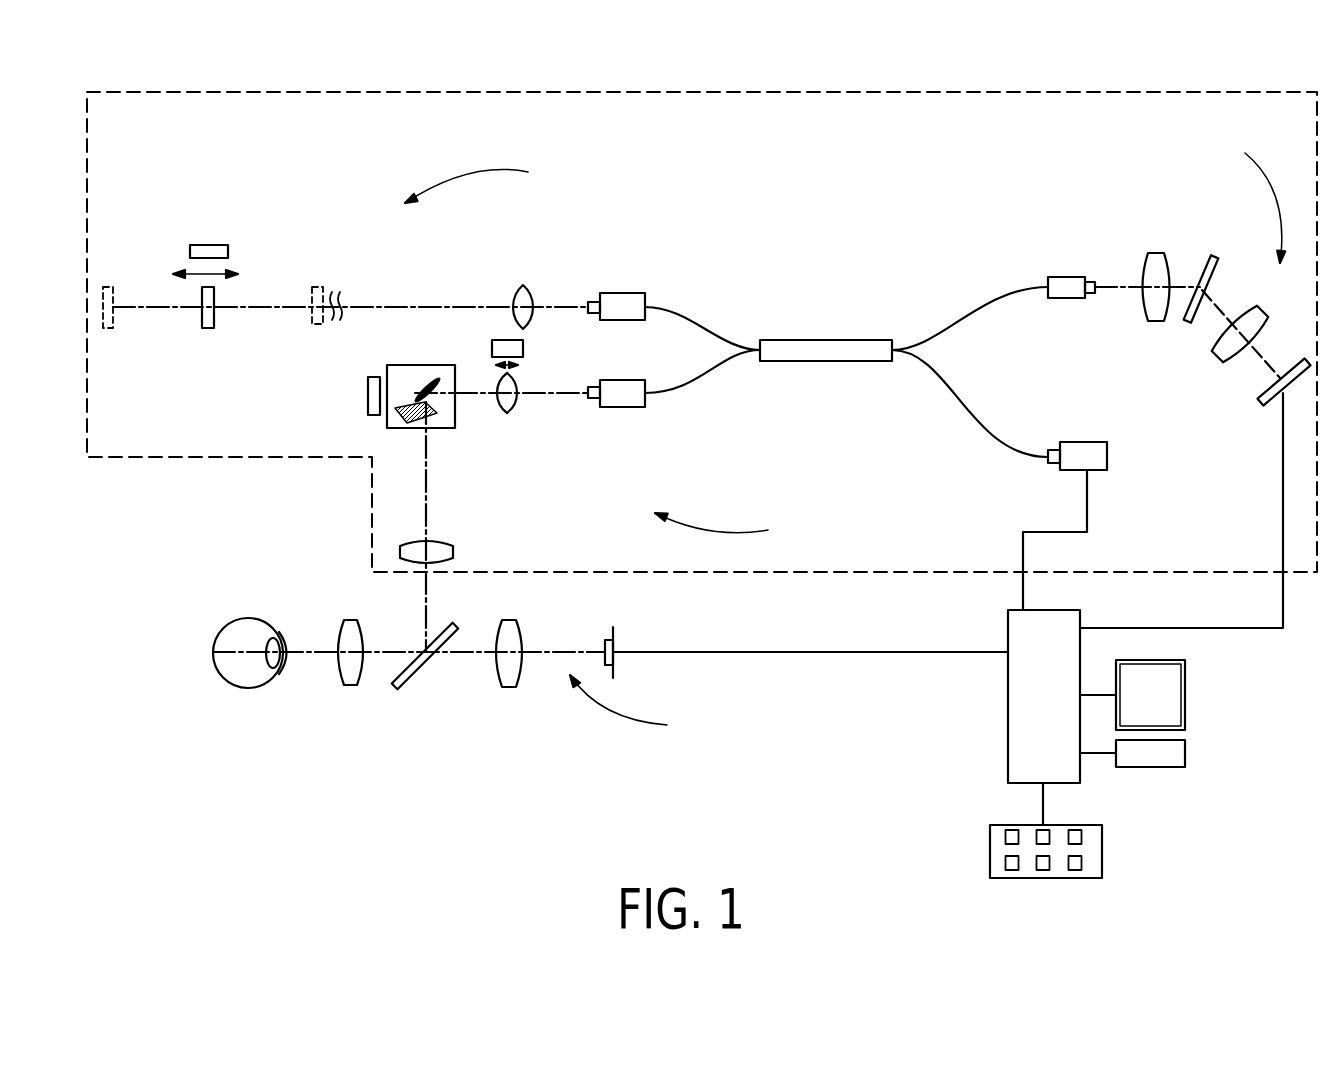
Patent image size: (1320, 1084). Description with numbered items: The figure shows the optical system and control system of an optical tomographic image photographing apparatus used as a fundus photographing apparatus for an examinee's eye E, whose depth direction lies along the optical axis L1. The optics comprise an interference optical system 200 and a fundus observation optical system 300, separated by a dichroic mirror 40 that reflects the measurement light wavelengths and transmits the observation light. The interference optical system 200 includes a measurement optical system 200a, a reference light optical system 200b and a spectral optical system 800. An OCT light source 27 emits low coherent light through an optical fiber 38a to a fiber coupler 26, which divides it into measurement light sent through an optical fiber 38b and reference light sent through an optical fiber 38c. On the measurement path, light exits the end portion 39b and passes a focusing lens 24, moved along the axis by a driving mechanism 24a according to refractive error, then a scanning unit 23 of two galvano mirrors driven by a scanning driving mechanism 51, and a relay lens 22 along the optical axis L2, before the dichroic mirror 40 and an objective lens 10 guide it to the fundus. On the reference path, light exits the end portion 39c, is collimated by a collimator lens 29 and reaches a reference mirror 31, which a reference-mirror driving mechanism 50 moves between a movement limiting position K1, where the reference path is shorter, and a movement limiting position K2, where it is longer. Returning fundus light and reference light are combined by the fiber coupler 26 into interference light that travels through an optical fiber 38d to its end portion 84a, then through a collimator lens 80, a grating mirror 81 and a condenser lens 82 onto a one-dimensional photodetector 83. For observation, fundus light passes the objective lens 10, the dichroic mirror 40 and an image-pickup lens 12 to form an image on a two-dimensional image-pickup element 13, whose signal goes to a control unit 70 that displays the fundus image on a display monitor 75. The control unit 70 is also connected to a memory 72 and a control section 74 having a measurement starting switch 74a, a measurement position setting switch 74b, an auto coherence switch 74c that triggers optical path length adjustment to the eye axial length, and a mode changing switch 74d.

The interference optical system 200 is at (243, 458).
The measurement optical system 200a is at (755, 524).
The reference light optical system 200b is at (504, 179).
The fundus observation optical system 300 is at (645, 702).
The spectral optical system 800 is at (1239, 197).
The movement limiting position K1 is at (318, 284).
The movement limiting position K2 is at (112, 286).
The reference mirror 31 is at (202, 310).
The reference-mirror driving mechanism 50 is at (212, 247).
The collimator lens 29 is at (520, 288).
The end portion of the optical fiber 39c is at (585, 303).
The end portion of the optical fiber 39b is at (590, 397).
The optical fiber 38c is at (693, 328).
The optical fiber 38b is at (703, 380).
The optical fiber 38d is at (973, 308).
The optical fiber 38a is at (983, 413).
The fiber coupler 26 is at (815, 350).
The end portion of the optical fiber 84a is at (1090, 277).
The OCT light source 27 is at (1108, 455).
The collimator lens 80 is at (1157, 258).
The grating mirror 81 is at (1215, 262).
The condenser lens 82 is at (1217, 350).
The photodetector 83 is at (1262, 400).
The scanning unit 23 is at (403, 365).
The scanning driving mechanism 51 is at (368, 392).
The driving mechanism 24a is at (503, 348).
The focusing lens 24 is at (503, 415).
The optical axis L2 is at (427, 492).
The relay lens 22 is at (455, 555).
The examinee's eye E is at (242, 684).
The objective lens 10 is at (350, 622).
The optical axis L1 is at (307, 655).
The dichroic mirror 40 is at (428, 672).
The image-pickup lens 12 is at (510, 680).
The image-pickup element 13 is at (615, 645).
The control unit 70 is at (1008, 697).
The display monitor 75 is at (1188, 688).
The memory 72 is at (1188, 750).
The control section 74 is at (1104, 845).
The measurement starting switch 74a is at (1012, 835).
The measurement position setting switch 74b is at (1035, 832).
The auto coherence switch 74c is at (1078, 833).
The mode changing switch 74d is at (1005, 860).